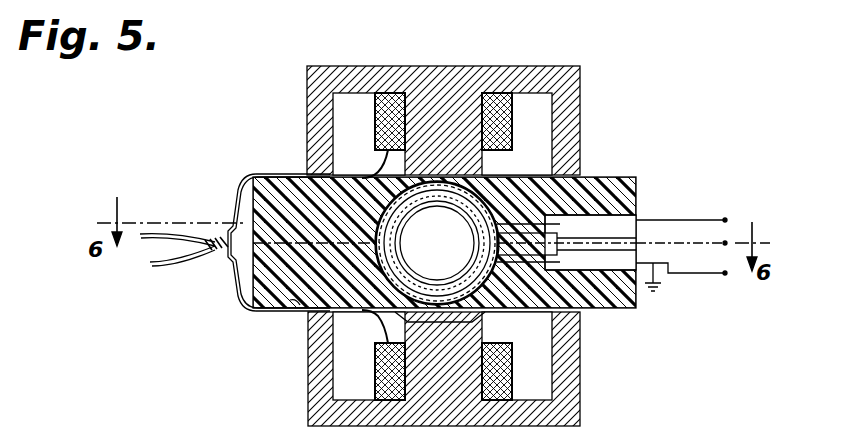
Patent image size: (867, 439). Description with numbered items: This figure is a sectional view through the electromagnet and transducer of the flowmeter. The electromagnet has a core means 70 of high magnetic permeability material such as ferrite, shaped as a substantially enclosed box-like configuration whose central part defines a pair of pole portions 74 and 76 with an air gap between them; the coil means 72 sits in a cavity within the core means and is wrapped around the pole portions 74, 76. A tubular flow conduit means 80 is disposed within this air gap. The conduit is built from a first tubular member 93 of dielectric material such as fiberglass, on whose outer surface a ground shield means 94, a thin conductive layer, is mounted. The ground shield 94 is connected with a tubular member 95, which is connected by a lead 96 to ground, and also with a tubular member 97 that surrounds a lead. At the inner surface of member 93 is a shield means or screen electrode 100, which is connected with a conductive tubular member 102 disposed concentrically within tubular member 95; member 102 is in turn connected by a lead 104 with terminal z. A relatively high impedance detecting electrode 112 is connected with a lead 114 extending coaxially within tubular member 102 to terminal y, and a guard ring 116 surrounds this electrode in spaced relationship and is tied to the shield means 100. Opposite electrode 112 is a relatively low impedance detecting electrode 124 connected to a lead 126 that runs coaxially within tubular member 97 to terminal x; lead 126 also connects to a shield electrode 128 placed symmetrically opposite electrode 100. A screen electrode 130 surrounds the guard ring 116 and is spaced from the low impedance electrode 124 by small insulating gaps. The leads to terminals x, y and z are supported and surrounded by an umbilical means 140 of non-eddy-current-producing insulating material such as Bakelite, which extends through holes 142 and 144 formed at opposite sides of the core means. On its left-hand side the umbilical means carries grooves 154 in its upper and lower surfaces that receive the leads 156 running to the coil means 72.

The core means 70 is at (592, 87).
The coil means 72 is at (520, 108).
The pole portion 74 is at (452, 172).
The pole portion 76 is at (453, 346).
The tubular flow conduit means 80 is at (458, 363).
The first tubular member 93 is at (478, 188).
The ground shield means 94 is at (500, 195).
The tubular member 95 is at (552, 222).
The lead 96 is at (636, 300).
The tubular member 97 is at (375, 248).
The shield means 100 is at (400, 190).
The conductive tubular member 102 is at (560, 236).
The lead 104 is at (686, 273).
The high impedance detecting electrode 112 is at (437, 243).
The lead 114 is at (648, 250).
The guard ring 116 is at (508, 268).
The low impedance detecting electrode 124 is at (410, 219).
The lead 126 is at (375, 222).
The shield electrode 128 is at (368, 281).
The screen electrode 130 is at (437, 243).
The umbilical means 140 is at (610, 312).
The hole 142 is at (590, 177).
The hole 144 is at (297, 312).
The grooves 154 is at (272, 174).
The leads 156 is at (178, 262).